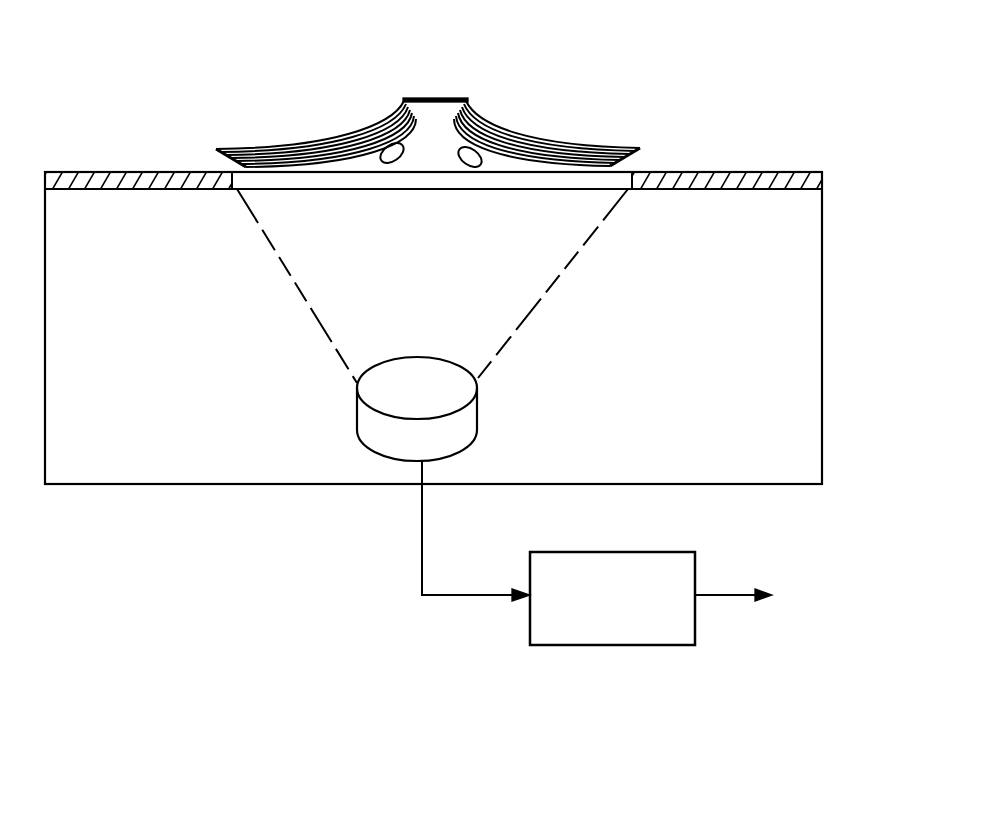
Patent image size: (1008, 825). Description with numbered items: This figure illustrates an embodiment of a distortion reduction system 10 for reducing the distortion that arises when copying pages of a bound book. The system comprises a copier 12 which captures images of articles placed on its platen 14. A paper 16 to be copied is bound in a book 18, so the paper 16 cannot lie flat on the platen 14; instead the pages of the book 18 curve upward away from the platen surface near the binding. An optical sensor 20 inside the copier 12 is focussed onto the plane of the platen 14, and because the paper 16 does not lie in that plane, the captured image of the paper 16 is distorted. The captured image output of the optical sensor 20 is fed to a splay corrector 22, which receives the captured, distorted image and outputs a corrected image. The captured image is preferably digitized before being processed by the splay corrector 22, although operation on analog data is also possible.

The distortion reduction system 10 is at (716, 67).
The copier 12 is at (805, 253).
The platen 14 is at (553, 182).
The paper 16 is at (375, 152).
The book 18 is at (468, 103).
The optical sensor 20 is at (370, 428).
The splay corrector 22 is at (667, 552).